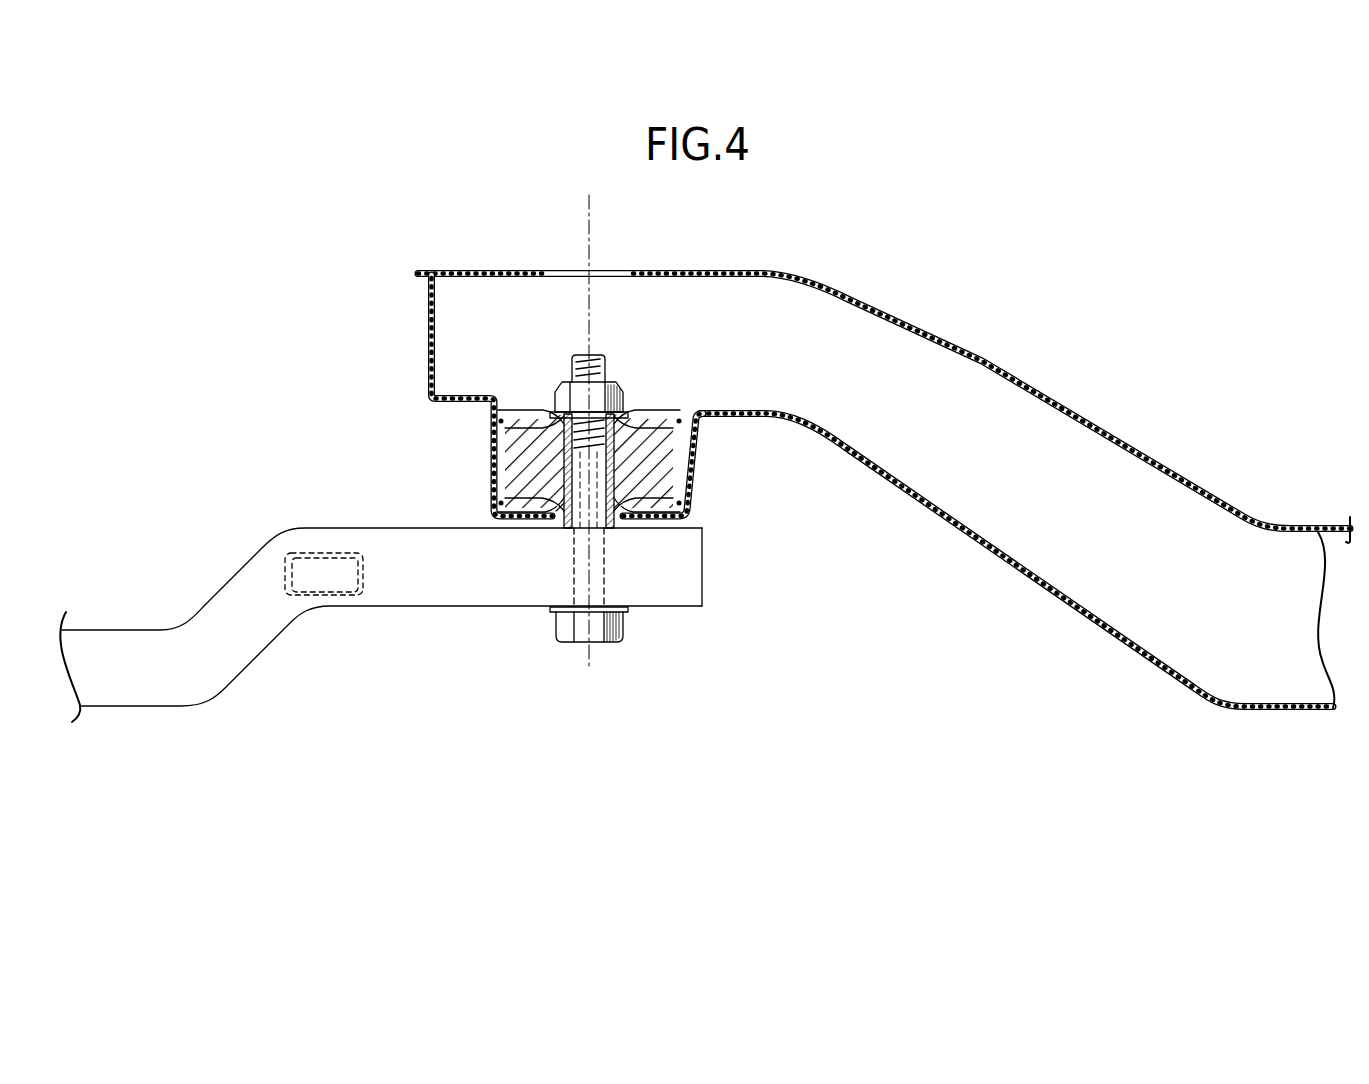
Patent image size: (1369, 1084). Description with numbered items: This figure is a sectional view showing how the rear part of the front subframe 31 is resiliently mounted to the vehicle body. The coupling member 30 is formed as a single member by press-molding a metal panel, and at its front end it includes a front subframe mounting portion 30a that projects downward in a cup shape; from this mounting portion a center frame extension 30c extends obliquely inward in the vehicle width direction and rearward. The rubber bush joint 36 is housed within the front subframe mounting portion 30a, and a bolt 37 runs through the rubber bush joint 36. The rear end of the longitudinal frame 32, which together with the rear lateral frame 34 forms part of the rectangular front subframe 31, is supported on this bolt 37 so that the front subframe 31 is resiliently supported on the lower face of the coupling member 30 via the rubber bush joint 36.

The coupling member 30 is at (980, 354).
The front subframe mounting portion 30a is at (698, 458).
The center frame extension 30c is at (1120, 435).
The front subframe 31 is at (243, 559).
The longitudinal frame 32 is at (168, 693).
The rear lateral frame 34 is at (333, 552).
The rubber bush joint 36 is at (530, 408).
The bolt 37 is at (604, 640).